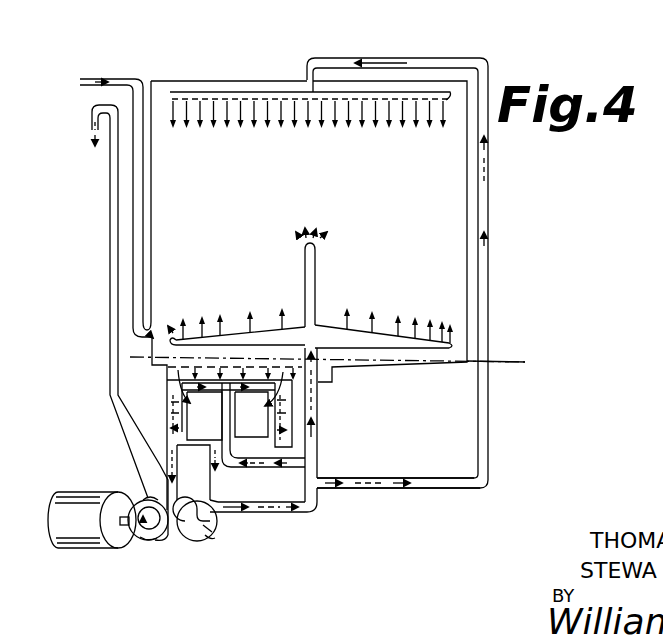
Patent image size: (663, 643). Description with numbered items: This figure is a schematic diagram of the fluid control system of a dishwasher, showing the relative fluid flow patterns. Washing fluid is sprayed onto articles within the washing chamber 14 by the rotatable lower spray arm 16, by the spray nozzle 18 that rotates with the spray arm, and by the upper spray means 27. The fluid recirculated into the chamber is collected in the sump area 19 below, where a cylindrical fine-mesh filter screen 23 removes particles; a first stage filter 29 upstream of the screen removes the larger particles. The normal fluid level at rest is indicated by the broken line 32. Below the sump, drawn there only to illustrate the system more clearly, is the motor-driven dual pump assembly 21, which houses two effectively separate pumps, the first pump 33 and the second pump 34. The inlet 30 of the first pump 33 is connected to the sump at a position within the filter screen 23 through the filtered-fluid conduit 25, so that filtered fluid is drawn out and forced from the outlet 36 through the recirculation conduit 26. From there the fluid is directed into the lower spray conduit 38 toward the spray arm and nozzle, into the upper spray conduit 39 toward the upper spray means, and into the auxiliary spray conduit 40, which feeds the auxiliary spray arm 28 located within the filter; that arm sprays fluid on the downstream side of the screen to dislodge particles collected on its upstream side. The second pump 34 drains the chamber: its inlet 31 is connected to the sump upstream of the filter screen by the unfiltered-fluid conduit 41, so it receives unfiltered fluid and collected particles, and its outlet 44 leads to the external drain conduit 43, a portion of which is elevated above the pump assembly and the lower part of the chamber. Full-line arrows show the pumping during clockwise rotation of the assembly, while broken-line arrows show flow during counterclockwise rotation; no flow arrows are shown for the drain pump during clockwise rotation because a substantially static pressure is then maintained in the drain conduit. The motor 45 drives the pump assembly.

The washing chamber 14 is at (258, 202).
The lower spray arm 16 is at (383, 327).
The spray nozzle 18 is at (318, 248).
The sump area 19 is at (233, 373).
The dual pump assembly 21 is at (177, 547).
The filter screen 23 is at (176, 410).
The filtered-fluid conduit 25 is at (190, 488).
The recirculation conduit 26 is at (283, 515).
The upper spray means 27 is at (265, 102).
The auxiliary spray arm 28 is at (266, 424).
The first stage filter 29 is at (178, 365).
The inlet of first pump 30 is at (217, 532).
The drain pump inlet 31 is at (150, 542).
The broken line 32 is at (510, 362).
The first pump 33 is at (214, 542).
The second pump 34 is at (151, 552).
The outlet of recirculation pump 36 is at (221, 513).
The lower spray conduit 38 is at (320, 407).
The upper spray conduit 39 is at (478, 433).
The auxiliary spray conduit 40 is at (254, 468).
The unfiltered-fluid conduit 41 is at (137, 462).
The external drain conduit 43 is at (130, 357).
The outlet of drain pump 44 is at (145, 492).
The motor 45 is at (88, 550).